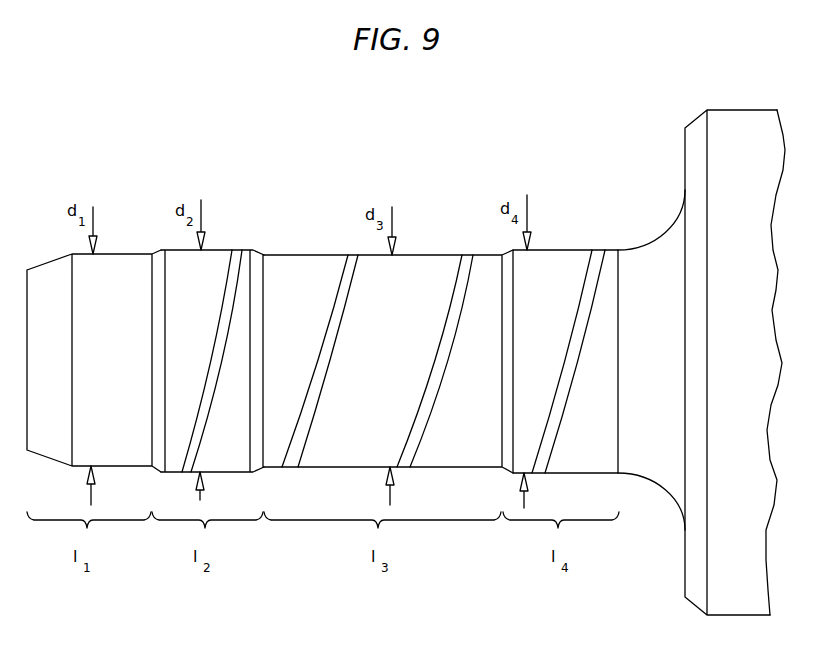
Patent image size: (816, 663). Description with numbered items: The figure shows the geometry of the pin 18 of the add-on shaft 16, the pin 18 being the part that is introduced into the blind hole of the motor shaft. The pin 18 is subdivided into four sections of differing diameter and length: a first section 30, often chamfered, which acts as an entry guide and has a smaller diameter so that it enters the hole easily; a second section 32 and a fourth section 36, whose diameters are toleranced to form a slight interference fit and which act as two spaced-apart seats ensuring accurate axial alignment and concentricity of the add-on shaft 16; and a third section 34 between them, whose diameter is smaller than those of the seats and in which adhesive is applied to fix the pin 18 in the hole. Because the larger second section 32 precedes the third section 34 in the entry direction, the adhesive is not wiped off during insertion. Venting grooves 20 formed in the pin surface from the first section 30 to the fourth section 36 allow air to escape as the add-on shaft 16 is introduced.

The add-on shaft 16 is at (742, 110).
The pin 18 is at (489, 158).
The venting grooves 20 is at (239, 250).
The first section 30 is at (125, 254).
The second section 32 is at (224, 250).
The third section 34 is at (433, 255).
The fourth section 36 is at (570, 250).